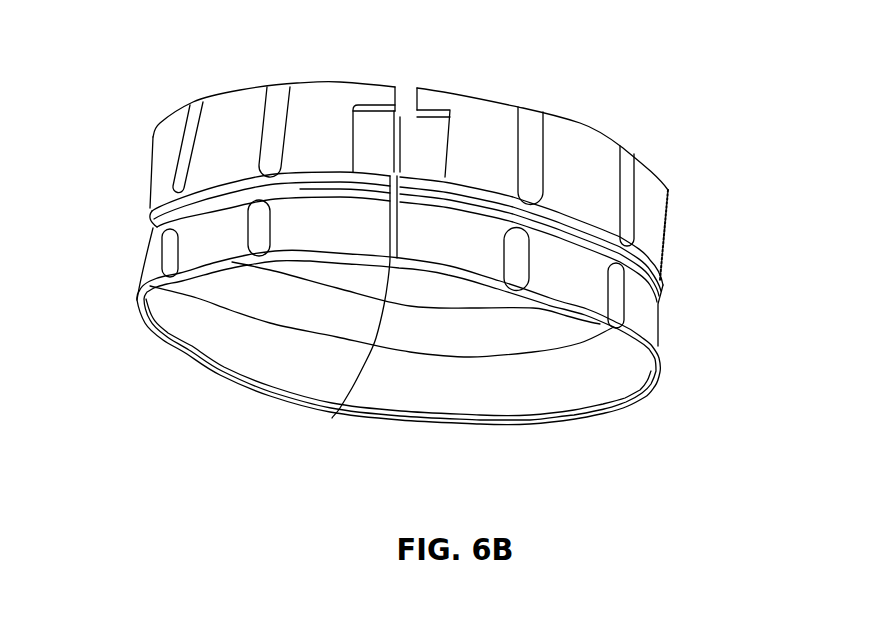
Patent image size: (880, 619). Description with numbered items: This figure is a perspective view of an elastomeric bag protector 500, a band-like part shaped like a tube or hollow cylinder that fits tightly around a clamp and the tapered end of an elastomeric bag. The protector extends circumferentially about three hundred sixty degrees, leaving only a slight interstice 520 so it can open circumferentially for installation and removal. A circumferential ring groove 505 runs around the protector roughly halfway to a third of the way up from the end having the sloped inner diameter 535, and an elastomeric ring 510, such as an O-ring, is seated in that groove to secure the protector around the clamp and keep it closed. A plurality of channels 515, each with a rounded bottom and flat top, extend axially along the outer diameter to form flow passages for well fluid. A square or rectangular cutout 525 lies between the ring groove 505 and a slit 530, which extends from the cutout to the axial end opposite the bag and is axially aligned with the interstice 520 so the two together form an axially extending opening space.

The elastomeric bag protector 500 is at (674, 248).
The circumferential ring groove 505 is at (152, 211).
The elastomeric ring 510 is at (152, 229).
The channels 515 is at (628, 162).
The interstice 520 is at (332, 418).
The cutout 525 is at (422, 135).
The slit 530 is at (406, 88).
The sloped inner diameter 535 is at (581, 414).